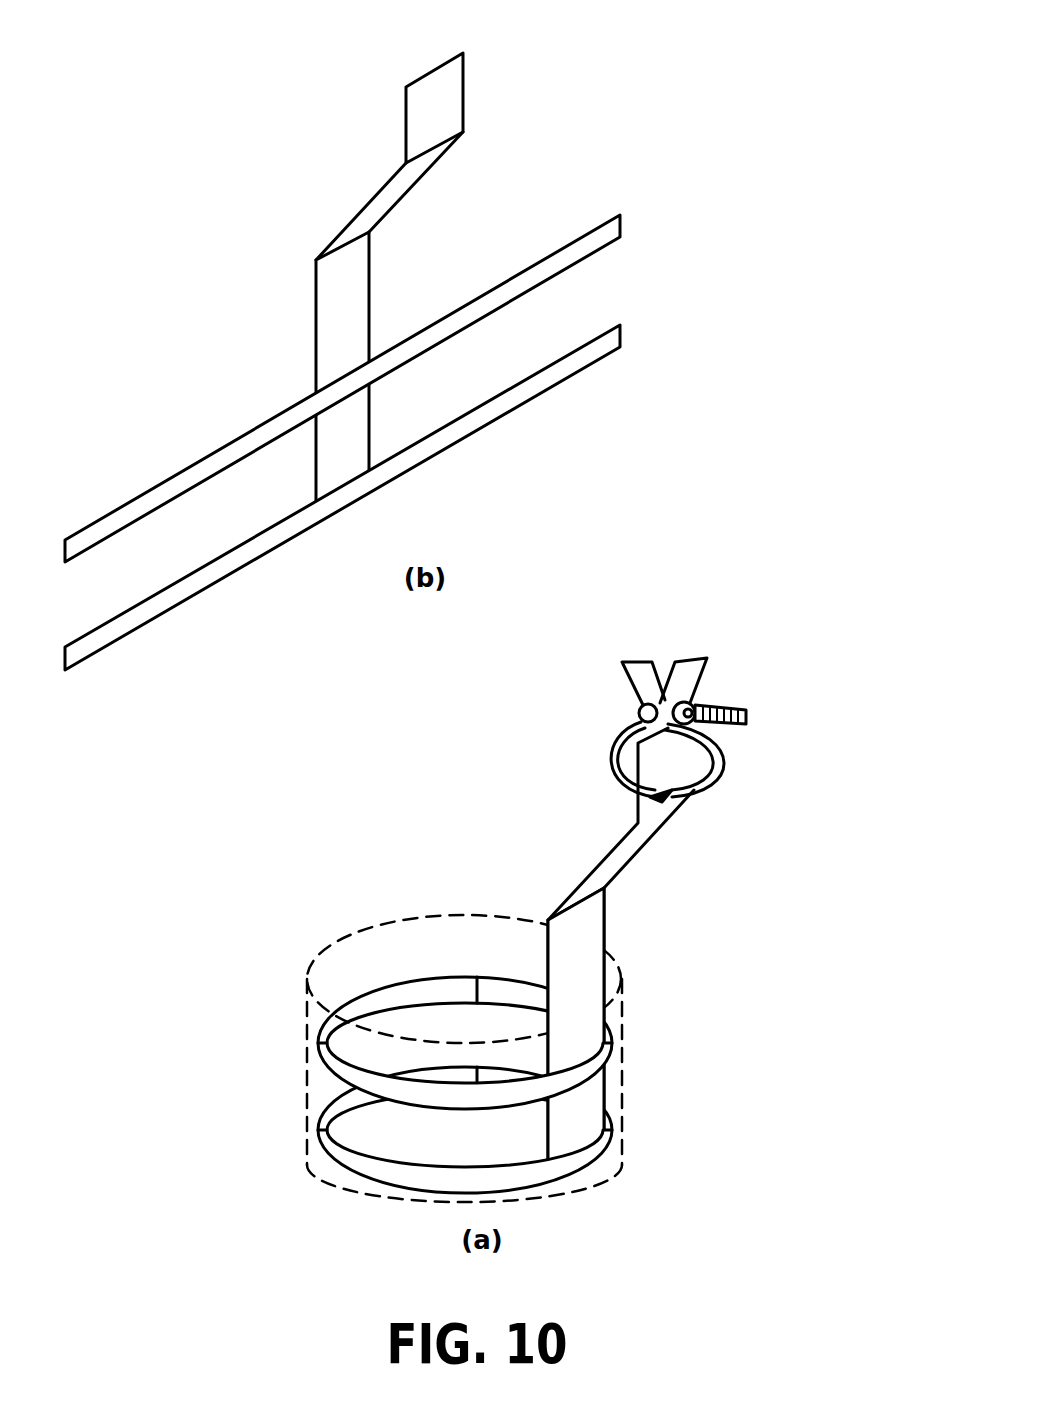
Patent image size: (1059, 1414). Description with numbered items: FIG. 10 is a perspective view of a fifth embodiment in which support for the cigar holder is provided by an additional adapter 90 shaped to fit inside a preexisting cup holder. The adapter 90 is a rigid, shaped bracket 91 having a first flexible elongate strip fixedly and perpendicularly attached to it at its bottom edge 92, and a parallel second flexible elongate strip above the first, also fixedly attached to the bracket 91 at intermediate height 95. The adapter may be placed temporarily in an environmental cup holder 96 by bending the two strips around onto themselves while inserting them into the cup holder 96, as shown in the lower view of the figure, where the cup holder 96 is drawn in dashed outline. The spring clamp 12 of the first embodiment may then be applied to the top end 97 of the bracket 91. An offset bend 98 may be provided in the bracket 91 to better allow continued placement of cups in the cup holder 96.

The adapter 90 is at (580, 120).
The bracket 91 is at (350, 288).
The bottom edge 92 is at (350, 503).
The intermediate height 95 is at (352, 398).
The spring clamp 12 is at (683, 678).
The top end 97 is at (660, 760).
The offset bend 98 is at (632, 848).
The cup holder 96 is at (607, 1008).